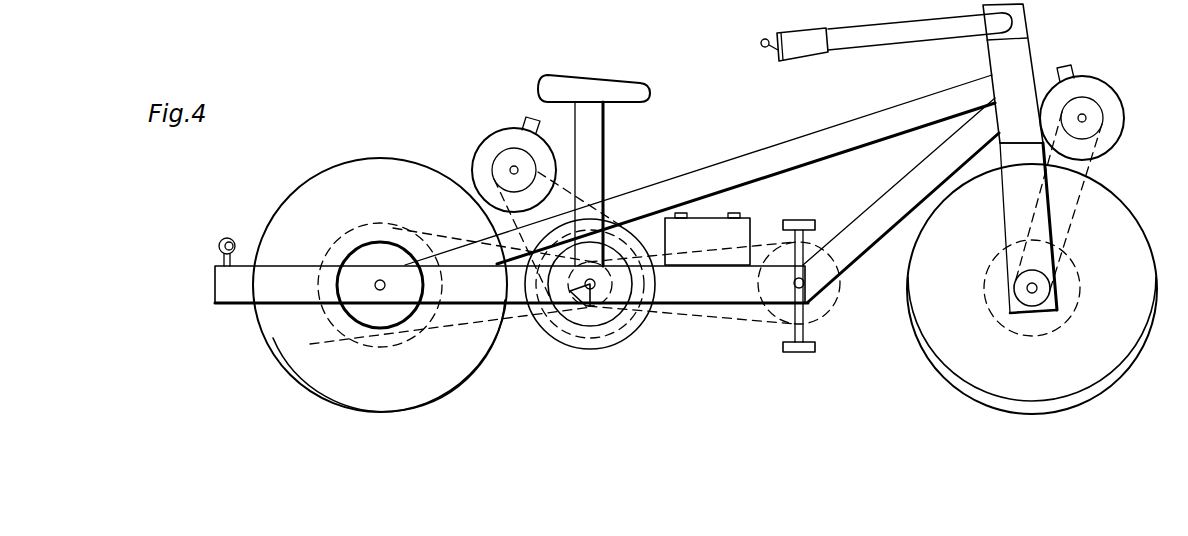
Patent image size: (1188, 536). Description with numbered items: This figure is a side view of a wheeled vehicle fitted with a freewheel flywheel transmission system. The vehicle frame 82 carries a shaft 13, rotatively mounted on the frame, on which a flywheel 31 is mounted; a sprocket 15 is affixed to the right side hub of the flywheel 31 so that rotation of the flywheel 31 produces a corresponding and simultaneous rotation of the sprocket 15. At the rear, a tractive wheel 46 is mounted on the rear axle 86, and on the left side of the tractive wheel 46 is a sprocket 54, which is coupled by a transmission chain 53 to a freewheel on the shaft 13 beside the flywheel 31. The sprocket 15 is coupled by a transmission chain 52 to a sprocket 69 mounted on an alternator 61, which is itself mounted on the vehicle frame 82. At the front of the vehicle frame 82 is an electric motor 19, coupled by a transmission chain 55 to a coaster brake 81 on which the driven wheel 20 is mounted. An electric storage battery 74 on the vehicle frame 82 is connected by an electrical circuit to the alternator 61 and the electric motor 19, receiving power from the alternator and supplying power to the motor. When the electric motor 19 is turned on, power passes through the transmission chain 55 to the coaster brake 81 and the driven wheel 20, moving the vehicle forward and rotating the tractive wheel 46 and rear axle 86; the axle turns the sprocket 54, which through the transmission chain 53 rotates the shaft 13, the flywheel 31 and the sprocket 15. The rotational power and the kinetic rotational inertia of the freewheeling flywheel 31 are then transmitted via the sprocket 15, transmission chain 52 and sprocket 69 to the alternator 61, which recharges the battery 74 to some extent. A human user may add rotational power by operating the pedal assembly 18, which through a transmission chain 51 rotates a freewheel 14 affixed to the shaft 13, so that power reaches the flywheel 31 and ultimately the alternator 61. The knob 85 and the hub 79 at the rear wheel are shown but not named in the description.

The shaft 13 is at (578, 304).
The freewheel 14 is at (535, 327).
The sprocket 15 is at (590, 325).
The pedal assembly 18 is at (825, 299).
The electric motor 19 is at (1102, 90).
The driven wheel 20 is at (1128, 216).
The flywheel 31 is at (624, 340).
The tractive wheel 46 is at (378, 163).
The transmission chain 51 is at (697, 318).
The transmission chain 52 is at (563, 188).
The transmission chain 53 is at (443, 237).
The sprocket 54 is at (372, 225).
The transmission chain 55 is at (1075, 218).
The alternator 61 is at (495, 140).
The sprocket 69 is at (492, 158).
The electric storage battery 74 is at (707, 239).
The rear wheel hub 79 is at (355, 332).
The coaster brake 81 is at (993, 259).
The vehicle frame 82 is at (232, 296).
The frame knob 85 is at (230, 240).
The rear axle 86 is at (379, 292).